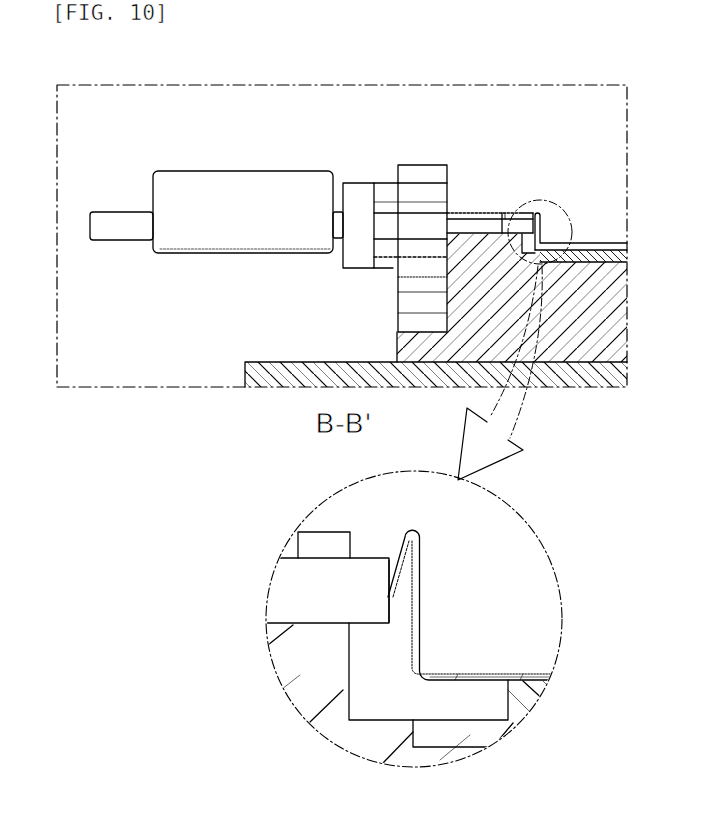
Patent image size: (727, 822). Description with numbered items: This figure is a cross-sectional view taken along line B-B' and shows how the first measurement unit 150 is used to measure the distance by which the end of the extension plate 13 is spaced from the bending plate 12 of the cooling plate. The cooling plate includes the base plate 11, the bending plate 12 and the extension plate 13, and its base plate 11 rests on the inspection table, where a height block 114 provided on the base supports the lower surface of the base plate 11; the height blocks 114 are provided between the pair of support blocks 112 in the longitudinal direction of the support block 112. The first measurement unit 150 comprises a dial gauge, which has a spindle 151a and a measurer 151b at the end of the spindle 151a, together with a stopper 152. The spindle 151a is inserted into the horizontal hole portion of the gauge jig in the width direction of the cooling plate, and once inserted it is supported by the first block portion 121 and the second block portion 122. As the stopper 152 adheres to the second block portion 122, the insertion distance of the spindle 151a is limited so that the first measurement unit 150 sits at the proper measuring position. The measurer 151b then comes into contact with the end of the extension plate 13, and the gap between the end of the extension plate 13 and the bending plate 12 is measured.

The first measurement unit 150 is at (168, 152).
The stopper 152 is at (363, 197).
The second block portion 122 is at (388, 195).
The first block portion 121 is at (424, 178).
The spindle 151a is at (485, 227).
The measurer 151b is at (388, 592).
The support block 112 is at (314, 678).
The bending plate 12 is at (421, 600).
The extension plate 13 is at (395, 551).
The base plate 11 is at (490, 673).
The height block 114 is at (529, 697).